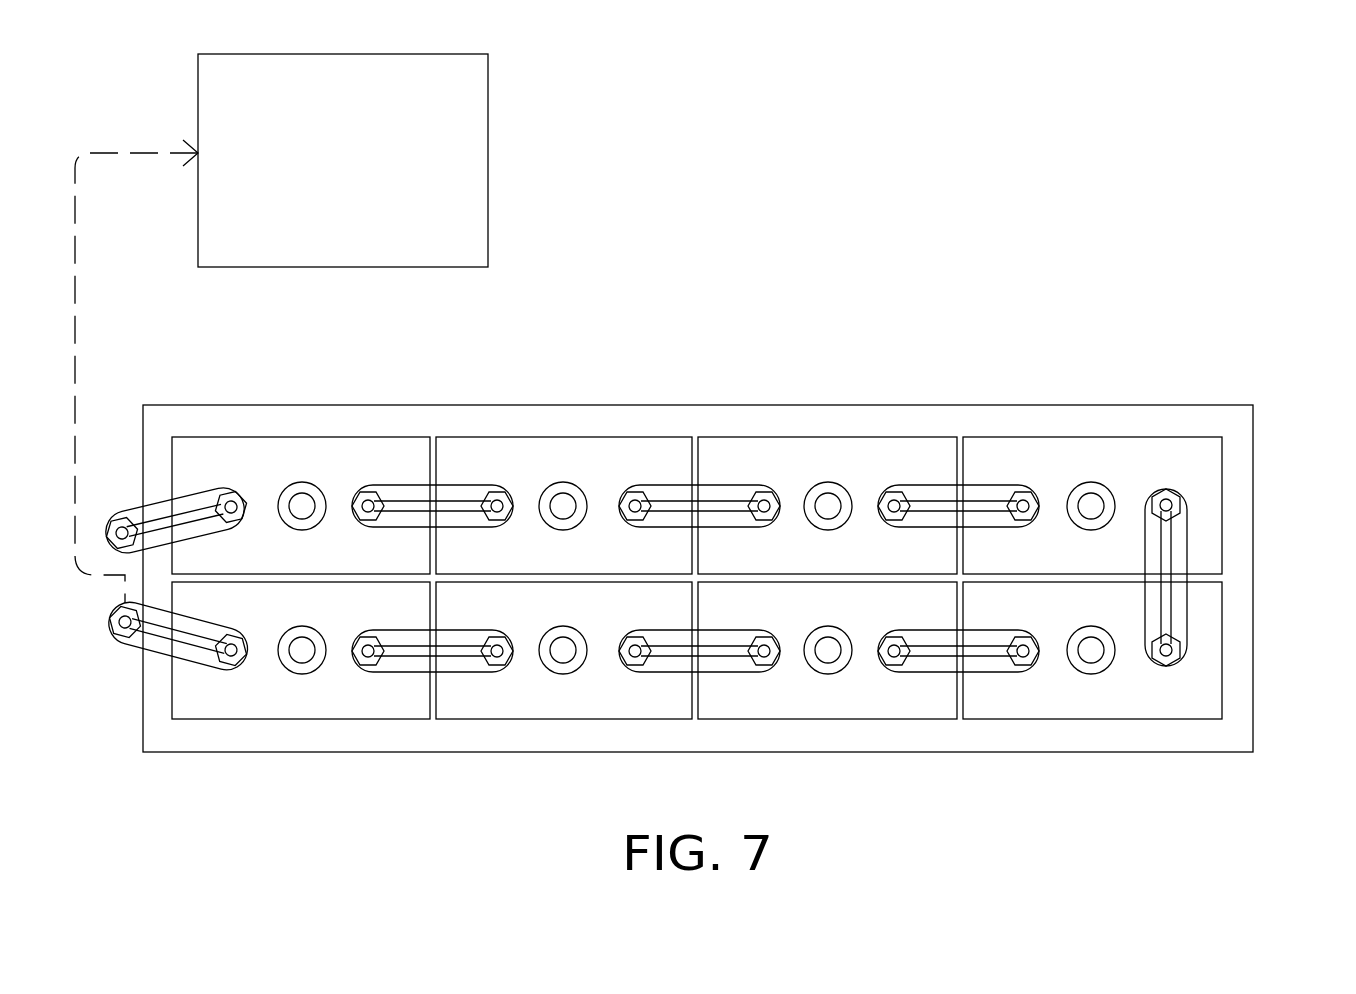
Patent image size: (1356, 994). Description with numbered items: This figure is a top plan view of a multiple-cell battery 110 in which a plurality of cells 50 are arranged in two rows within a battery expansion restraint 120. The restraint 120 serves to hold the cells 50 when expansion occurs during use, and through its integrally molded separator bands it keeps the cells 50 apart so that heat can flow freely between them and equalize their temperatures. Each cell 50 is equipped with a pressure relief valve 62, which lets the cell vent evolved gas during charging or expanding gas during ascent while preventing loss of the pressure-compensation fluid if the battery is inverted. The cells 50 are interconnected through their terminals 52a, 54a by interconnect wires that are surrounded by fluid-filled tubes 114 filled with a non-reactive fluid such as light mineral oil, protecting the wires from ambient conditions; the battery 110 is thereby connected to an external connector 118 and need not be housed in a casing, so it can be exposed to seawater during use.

The cell 50 is at (328, 452).
The first terminal 52a is at (481, 488).
The second terminal 54a is at (356, 490).
The pressure relief valve 62 is at (307, 530).
The battery 110 is at (1054, 290).
The fluid-filled tube 114 is at (457, 486).
The external connector 118 is at (487, 150).
The battery expansion restraint 120 is at (1190, 405).